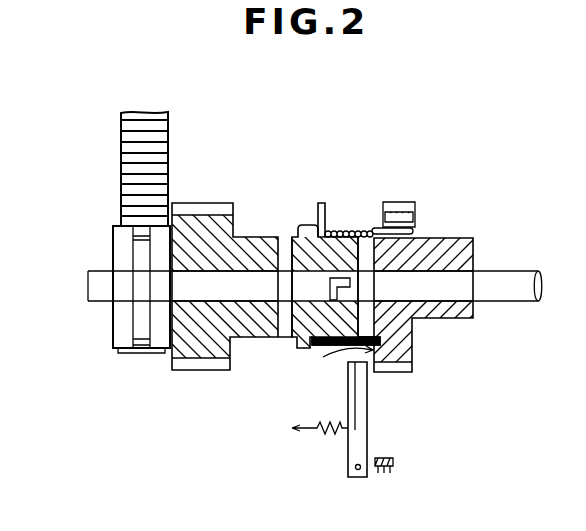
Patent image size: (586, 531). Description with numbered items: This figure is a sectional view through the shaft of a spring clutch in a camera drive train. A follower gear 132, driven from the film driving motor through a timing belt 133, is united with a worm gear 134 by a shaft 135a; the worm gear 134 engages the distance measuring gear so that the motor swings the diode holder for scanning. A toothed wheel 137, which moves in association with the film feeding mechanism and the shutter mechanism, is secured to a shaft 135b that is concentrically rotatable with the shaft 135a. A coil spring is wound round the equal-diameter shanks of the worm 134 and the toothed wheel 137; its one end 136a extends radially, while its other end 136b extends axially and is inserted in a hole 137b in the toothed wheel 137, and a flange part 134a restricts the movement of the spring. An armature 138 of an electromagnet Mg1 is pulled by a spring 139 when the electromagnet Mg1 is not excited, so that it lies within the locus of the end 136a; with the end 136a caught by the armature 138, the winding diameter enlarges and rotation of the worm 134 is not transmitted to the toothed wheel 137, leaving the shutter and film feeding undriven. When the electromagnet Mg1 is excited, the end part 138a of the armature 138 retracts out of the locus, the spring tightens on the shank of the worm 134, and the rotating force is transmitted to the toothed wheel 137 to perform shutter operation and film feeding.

The follower gear 132 is at (116, 350).
The timing belt 133 is at (147, 135).
The worm gear 134 is at (197, 343).
The flange part 134a is at (310, 226).
The shaft 135a is at (88, 290).
The shaft 135b is at (503, 294).
The one end of the spring 136a is at (325, 205).
The other end of the spring 136b is at (414, 226).
The toothed wheel 137 is at (463, 262).
The hole 137b is at (413, 234).
The armature 138 is at (360, 428).
The end part of the armature 138a is at (360, 385).
The spring 139 is at (323, 430).
The electromagnet Mg1 is at (397, 457).